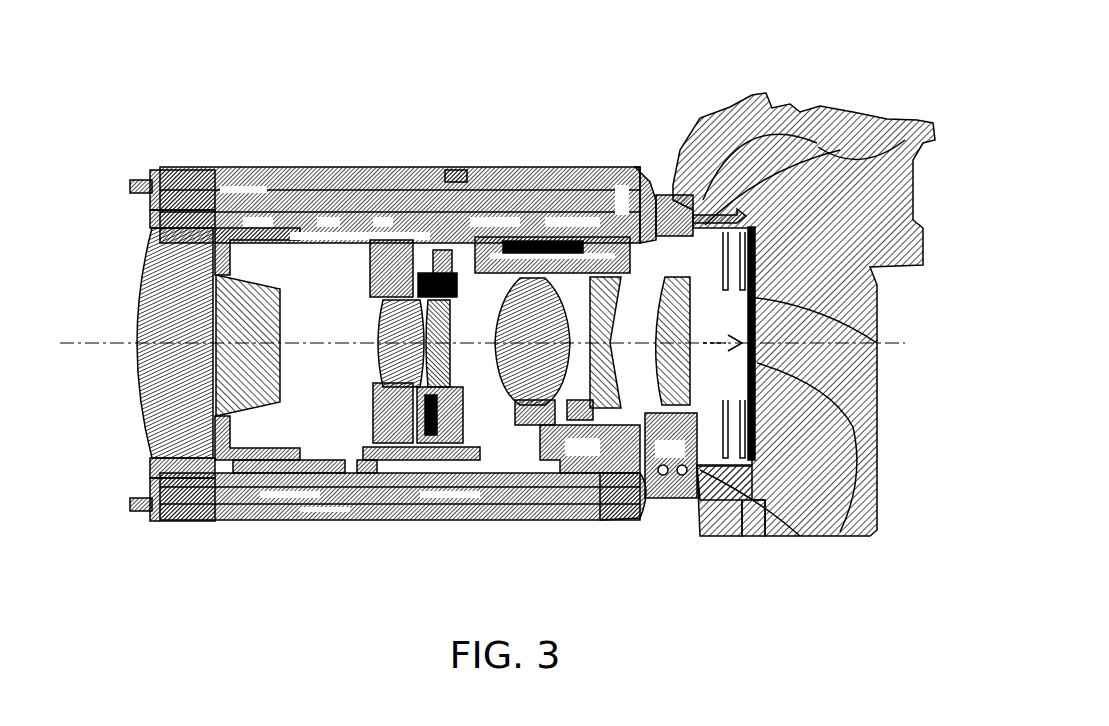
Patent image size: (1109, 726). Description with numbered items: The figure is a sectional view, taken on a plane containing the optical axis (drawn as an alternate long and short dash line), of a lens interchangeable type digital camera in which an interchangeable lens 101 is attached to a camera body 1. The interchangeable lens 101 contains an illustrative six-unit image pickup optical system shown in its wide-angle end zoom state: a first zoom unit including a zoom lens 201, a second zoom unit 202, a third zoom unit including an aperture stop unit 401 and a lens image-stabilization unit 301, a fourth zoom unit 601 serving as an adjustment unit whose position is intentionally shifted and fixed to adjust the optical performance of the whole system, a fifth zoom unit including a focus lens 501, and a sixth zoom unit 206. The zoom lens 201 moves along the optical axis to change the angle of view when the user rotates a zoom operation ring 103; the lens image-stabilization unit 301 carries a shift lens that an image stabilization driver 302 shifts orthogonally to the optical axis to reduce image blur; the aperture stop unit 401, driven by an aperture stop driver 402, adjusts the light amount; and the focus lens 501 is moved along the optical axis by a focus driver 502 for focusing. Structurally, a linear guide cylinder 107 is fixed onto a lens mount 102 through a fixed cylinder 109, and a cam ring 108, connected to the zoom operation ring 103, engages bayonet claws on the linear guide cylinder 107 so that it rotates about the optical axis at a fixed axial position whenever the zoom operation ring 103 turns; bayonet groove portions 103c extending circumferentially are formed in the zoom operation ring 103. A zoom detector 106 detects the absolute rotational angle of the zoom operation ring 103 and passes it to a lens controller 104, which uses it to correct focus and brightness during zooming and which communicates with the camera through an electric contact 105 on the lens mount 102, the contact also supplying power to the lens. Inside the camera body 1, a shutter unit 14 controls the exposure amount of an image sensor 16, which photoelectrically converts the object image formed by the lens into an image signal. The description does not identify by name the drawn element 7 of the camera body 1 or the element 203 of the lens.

The camera body 1 is at (815, 72).
The camera body 7 is at (760, 92).
The shutter unit 14 is at (882, 135).
The image sensor 16 is at (862, 536).
The interchangeable lens 101 is at (241, 78).
The lens mount 102 is at (640, 170).
The zoom operation ring 103 is at (292, 170).
The bayonet groove portions 103c is at (458, 175).
The lens controller 104 is at (652, 525).
The electric contact 105 is at (768, 533).
The zoom detector 106 is at (555, 522).
The linear guide cylinder 107 is at (140, 333).
The cam ring 108 is at (147, 265).
The fixed cylinder 109 is at (601, 172).
The zoom lens 201 is at (152, 175).
The second zoom unit 202 is at (148, 470).
The front ring 203 is at (235, 520).
The sixth zoom unit 206 is at (878, 348).
The lens image-stabilization unit 301 is at (455, 320).
The image stabilization driver 302 is at (382, 372).
The aperture stop unit 401 is at (270, 522).
The aperture stop driver 402 is at (365, 170).
The focus lens 501 is at (576, 196).
The focus driver 502 is at (503, 178).
The fourth zoom unit 601 is at (500, 522).